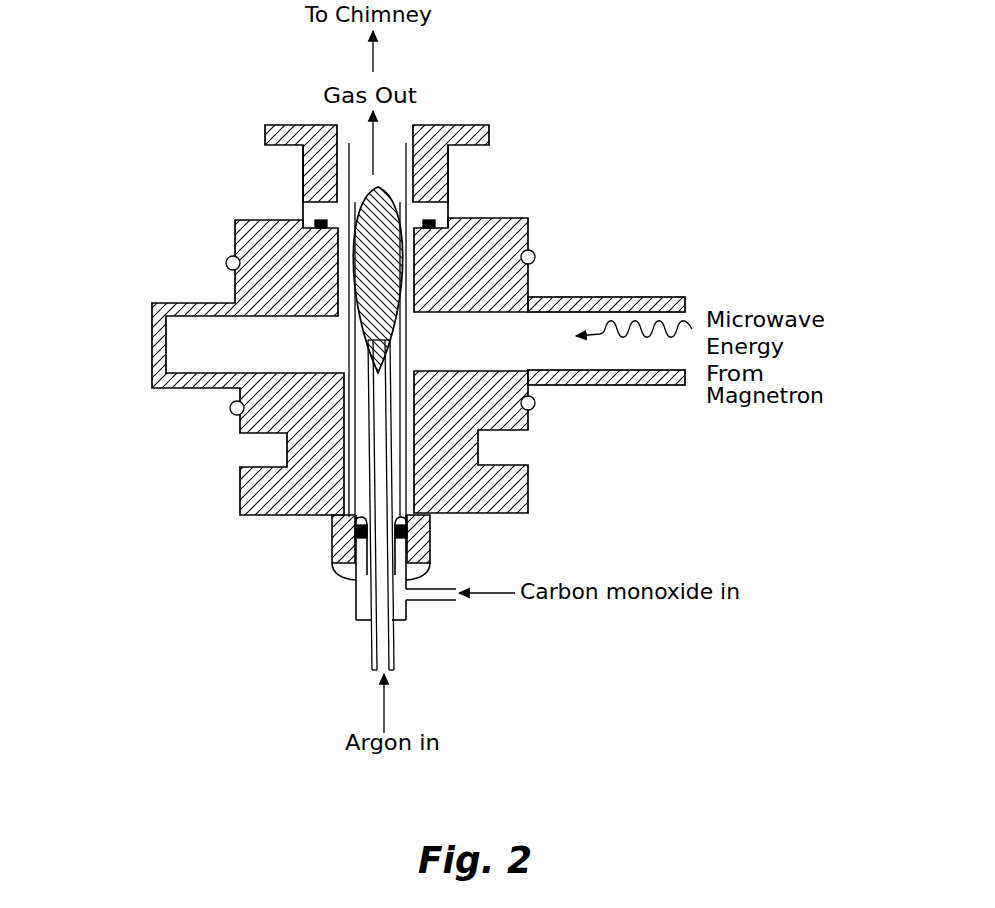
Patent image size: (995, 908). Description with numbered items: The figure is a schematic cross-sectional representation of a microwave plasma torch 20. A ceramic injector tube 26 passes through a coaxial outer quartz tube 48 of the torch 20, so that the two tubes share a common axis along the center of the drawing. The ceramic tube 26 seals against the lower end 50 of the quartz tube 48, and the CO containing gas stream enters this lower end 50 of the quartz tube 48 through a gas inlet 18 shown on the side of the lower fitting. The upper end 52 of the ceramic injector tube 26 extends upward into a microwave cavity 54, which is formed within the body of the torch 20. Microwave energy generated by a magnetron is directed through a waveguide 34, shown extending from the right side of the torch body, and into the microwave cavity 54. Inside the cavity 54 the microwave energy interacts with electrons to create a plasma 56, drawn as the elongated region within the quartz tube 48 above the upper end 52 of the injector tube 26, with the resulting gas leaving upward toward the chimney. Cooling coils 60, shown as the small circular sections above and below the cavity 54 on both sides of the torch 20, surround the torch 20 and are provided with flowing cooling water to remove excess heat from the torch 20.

The plasma torch 20 is at (220, 125).
The microwave cavity 54 is at (470, 345).
The waveguide 34 is at (548, 296).
The plasma 56 is at (375, 280).
The outer quartz tube 48 is at (407, 398).
The upper end of ceramic injector tube 52 is at (380, 422).
The ceramic injector tube 26 is at (393, 657).
The lower end of quartz tube 50 is at (366, 622).
The gas inlet 18 is at (440, 589).
The cooling coils 60 is at (715, 440).